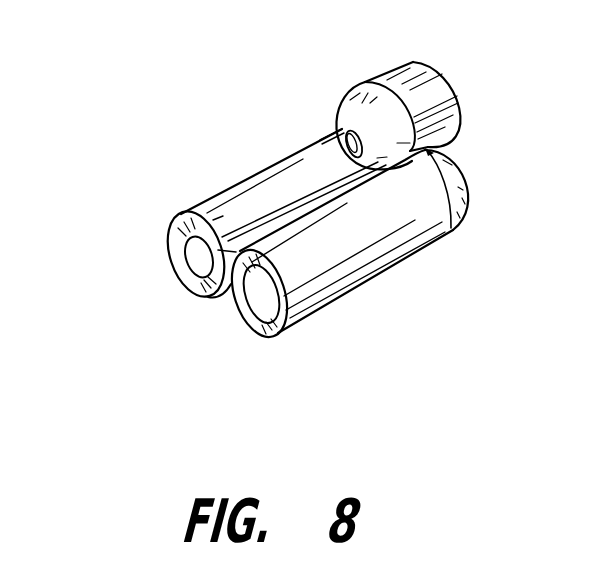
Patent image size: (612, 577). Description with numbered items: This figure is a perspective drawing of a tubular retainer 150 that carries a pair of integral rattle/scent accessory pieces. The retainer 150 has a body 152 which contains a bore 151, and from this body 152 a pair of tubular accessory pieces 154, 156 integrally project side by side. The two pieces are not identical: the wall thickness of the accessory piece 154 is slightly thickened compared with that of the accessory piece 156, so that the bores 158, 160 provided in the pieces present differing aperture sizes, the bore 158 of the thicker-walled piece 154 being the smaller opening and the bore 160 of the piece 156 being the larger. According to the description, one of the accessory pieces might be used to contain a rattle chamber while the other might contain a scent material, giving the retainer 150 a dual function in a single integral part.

The retainer 150 is at (313, 185).
The bore 151 is at (346, 140).
The body 152 is at (388, 72).
The tubular accessory piece 154 is at (257, 165).
The tubular accessory piece 156 is at (322, 310).
The bore 158 is at (187, 247).
The bore 160 is at (250, 300).